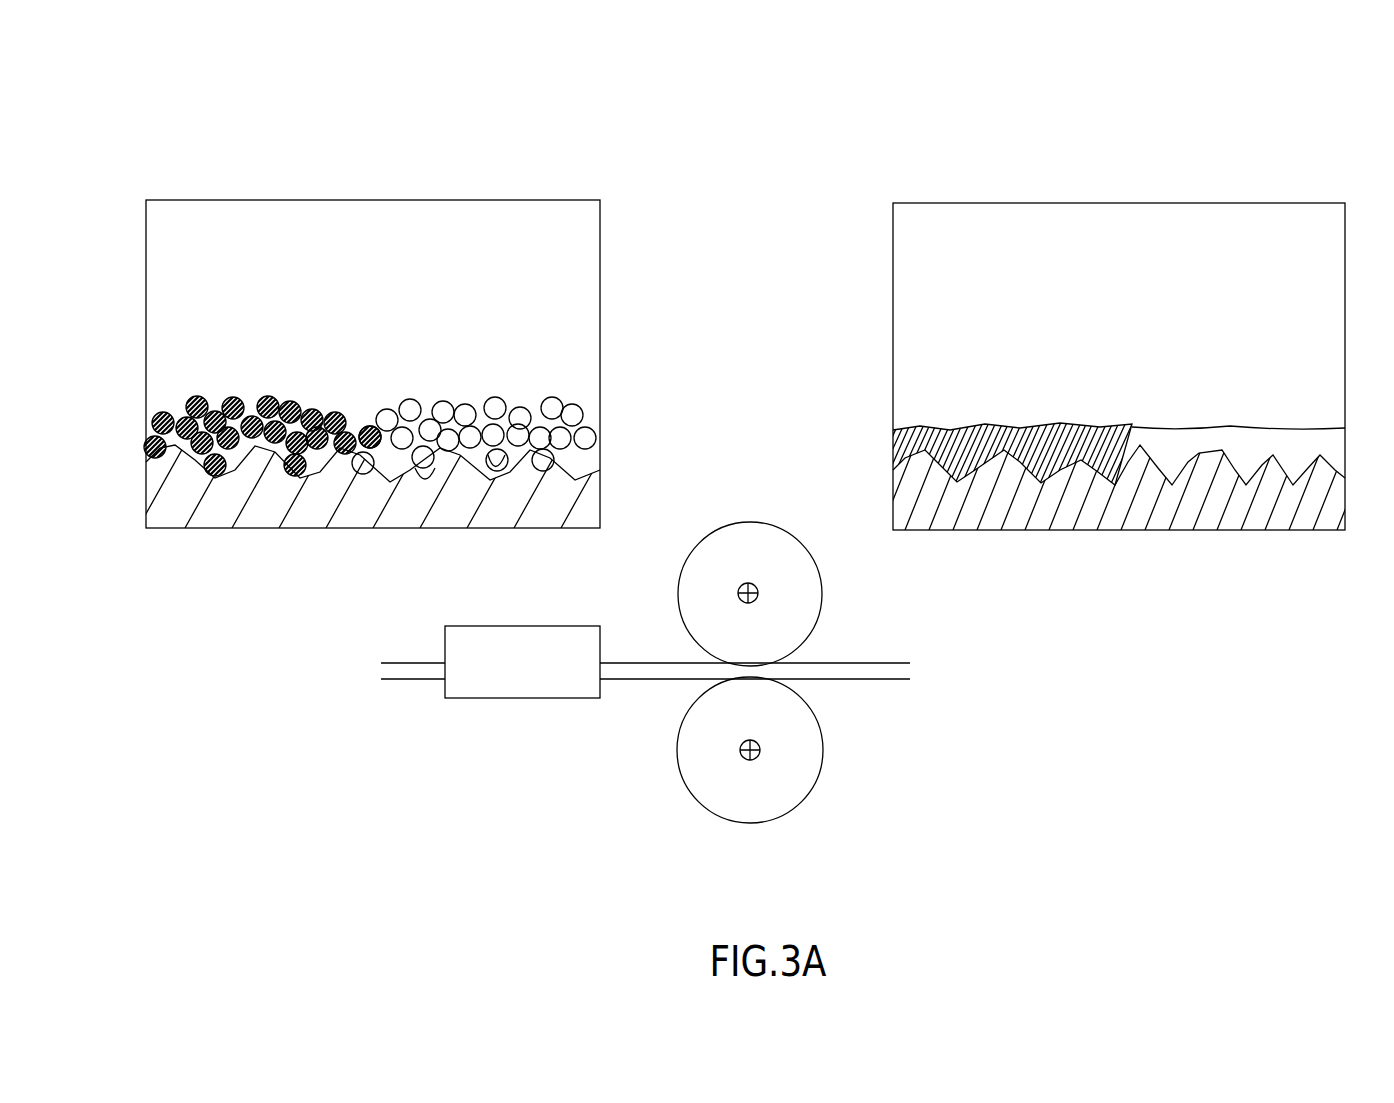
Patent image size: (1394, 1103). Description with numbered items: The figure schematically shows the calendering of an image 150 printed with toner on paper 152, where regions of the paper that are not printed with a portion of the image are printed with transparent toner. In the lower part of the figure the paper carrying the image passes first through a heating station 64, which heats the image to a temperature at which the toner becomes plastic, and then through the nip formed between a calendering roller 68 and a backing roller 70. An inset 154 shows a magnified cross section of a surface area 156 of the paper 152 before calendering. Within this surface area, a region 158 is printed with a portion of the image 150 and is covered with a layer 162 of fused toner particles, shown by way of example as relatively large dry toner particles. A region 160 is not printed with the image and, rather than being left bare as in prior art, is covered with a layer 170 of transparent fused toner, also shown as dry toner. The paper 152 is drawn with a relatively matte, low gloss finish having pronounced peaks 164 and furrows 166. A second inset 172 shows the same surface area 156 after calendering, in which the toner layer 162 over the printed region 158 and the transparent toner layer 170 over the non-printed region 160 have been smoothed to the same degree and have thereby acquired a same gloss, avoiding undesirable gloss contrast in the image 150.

The inset 154 is at (550, 135).
The inset 172 is at (1292, 138).
The paper 152 is at (417, 507).
The image 150 is at (414, 663).
The surface area 156 is at (413, 273).
The region 158 is at (294, 332).
The region 160 is at (518, 337).
The toner layer 162 is at (173, 403).
The peaks 164 is at (378, 424).
The furrows 166 is at (495, 465).
The layer of transparent fused toner 170 is at (543, 394).
The heating station 64 is at (504, 698).
The calendering roller 68 is at (762, 528).
The backing roller 70 is at (791, 791).